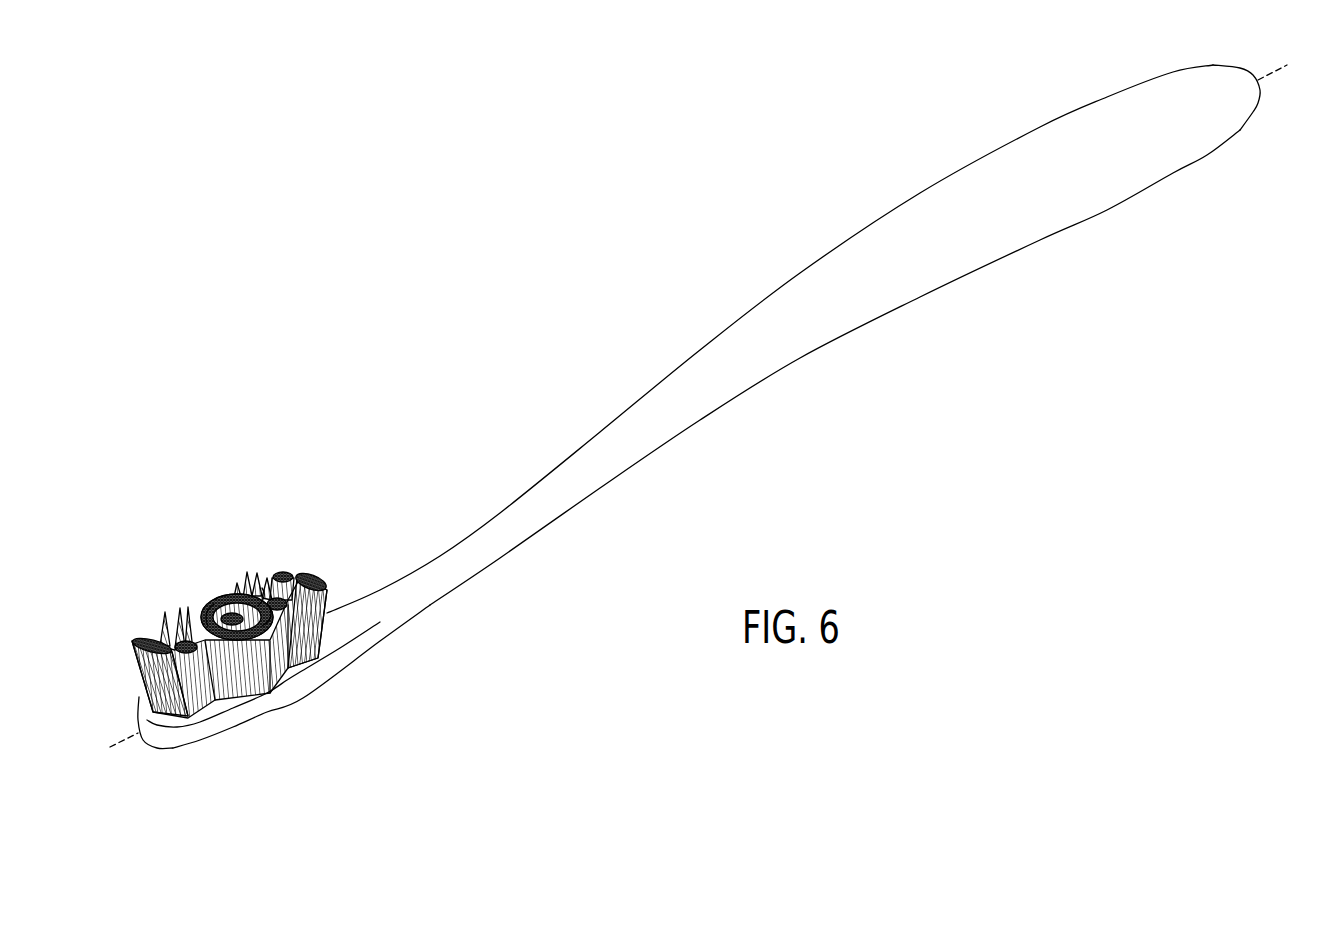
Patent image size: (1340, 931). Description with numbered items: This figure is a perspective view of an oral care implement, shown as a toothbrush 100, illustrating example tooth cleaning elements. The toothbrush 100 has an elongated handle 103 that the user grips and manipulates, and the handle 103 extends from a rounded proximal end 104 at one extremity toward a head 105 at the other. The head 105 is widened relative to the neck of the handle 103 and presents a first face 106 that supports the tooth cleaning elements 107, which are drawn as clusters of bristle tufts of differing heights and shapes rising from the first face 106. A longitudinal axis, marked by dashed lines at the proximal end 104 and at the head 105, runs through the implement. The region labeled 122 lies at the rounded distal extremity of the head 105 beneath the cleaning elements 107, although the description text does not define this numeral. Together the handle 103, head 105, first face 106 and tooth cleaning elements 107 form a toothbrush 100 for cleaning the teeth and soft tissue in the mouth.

The toothbrush 100 is at (792, 204).
The handle 103 is at (743, 332).
The proximal end 104 is at (1260, 92).
The head 105 is at (260, 706).
The first face 106 is at (280, 688).
The tooth cleaning elements 107 is at (329, 569).
The distal end of head 122 is at (146, 760).